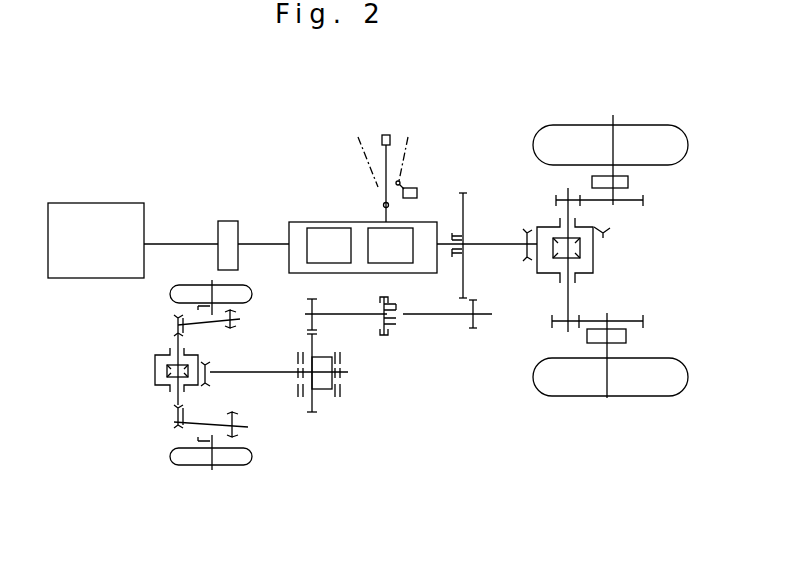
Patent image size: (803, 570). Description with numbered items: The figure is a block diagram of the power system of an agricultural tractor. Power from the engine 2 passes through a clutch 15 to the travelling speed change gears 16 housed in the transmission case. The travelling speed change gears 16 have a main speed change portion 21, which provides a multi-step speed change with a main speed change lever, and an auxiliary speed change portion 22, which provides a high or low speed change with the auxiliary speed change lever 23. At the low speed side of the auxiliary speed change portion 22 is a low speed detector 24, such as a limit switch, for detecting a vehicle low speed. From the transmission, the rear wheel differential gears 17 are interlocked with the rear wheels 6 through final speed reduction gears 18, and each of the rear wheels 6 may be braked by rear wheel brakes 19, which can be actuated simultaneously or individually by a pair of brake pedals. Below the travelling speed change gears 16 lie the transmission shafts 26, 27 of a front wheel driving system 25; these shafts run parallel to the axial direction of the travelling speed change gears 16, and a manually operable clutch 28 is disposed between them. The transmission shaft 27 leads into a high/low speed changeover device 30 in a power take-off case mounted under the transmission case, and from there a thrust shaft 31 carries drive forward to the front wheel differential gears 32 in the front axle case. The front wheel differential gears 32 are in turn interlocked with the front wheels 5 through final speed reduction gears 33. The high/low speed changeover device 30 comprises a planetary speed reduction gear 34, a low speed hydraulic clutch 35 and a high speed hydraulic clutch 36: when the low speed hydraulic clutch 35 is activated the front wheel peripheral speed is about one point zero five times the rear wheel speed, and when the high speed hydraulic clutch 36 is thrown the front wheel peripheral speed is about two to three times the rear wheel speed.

The engine 2 is at (87, 255).
The front wheels 5 is at (184, 286).
The rear wheels 6 is at (653, 132).
The clutch 15 is at (228, 221).
The travelling speed change gears 16 is at (343, 222).
The rear wheel differential gears 17 is at (597, 253).
The final speed reduction gears 18 is at (626, 209).
The rear wheel brakes 19 is at (628, 181).
The main speed change portion 21 is at (319, 256).
The auxiliary speed change portion 22 is at (380, 256).
The auxiliary speed change lever 23 is at (387, 128).
The low speed detector 24 is at (417, 193).
The front wheel driving system 25 is at (400, 343).
The transmission shaft 26 is at (432, 314).
The transmission shaft 27 is at (345, 314).
The manually operable clutch 28 is at (383, 336).
The high/low speed changeover device 30 is at (342, 395).
The thrust shaft 31 is at (260, 372).
The front wheel differential gears 32 is at (151, 369).
The final speed reduction gears 33 is at (177, 318).
The planetary speed reduction gear 34 is at (318, 357).
The low speed hydraulic clutch 35 is at (336, 390).
The high speed hydraulic clutch 36 is at (300, 397).